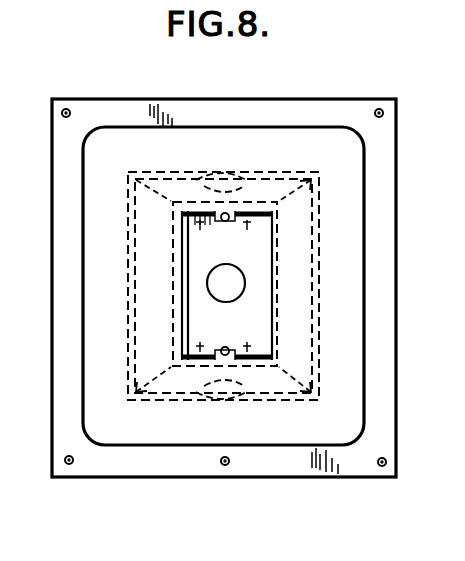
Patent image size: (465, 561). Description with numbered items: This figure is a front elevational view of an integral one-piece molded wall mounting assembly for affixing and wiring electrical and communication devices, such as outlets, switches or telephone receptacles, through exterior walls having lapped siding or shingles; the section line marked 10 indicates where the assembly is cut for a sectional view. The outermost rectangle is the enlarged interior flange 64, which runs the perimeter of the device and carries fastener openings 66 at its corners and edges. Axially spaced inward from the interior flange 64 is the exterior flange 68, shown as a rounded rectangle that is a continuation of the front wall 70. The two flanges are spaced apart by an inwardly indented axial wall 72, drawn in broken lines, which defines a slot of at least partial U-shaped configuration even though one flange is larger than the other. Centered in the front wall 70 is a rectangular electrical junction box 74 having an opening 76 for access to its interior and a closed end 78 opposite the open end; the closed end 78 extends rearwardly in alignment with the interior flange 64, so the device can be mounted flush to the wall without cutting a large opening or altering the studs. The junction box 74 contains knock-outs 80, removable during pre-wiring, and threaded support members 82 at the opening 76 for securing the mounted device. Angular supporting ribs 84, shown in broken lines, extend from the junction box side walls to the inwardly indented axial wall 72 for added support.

The section line 10- 10 is at (128, 283).
The interior flange 64 is at (122, 468).
The fastener openings 66 is at (68, 110).
The exterior flange 68 is at (285, 433).
The front wall 70 is at (304, 358).
The inwardly indented axial wall 72 is at (128, 218).
The electrical junction box 74 is at (222, 290).
The opening 76 is at (275, 255).
The closed end 78 is at (180, 256).
The knock-outs 80 is at (184, 219).
The threaded support members 82 is at (226, 223).
The angular supporting ribs 84 is at (217, 172).